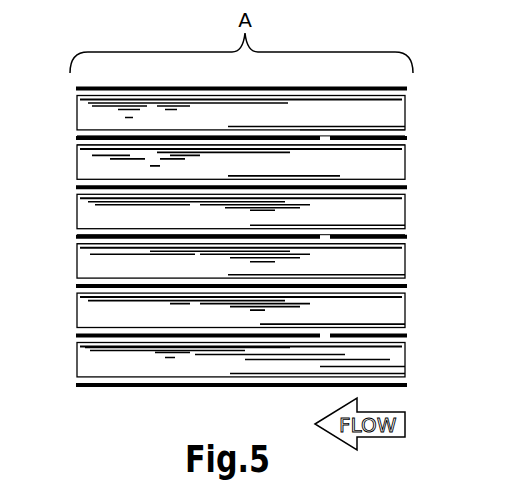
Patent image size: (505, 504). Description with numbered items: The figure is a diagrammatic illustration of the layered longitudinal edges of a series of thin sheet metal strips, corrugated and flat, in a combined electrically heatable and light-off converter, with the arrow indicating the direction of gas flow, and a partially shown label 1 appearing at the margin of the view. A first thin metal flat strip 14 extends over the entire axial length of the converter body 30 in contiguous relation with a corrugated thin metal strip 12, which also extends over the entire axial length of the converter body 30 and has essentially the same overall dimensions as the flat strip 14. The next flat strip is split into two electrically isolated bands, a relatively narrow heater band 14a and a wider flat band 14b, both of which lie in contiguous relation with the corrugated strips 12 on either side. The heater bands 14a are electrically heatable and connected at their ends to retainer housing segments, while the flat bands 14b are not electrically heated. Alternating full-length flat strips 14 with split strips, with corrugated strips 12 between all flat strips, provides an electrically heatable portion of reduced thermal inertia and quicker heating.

The flat thin metal strip 14 is at (78, 90).
The corrugated thin metal strip 12 is at (74, 160).
The heater band 14a is at (398, 137).
The flat band 14b is at (79, 146).
The converter body 30 is at (417, 132).
The heat exchanger assembly 1 is at (290, 342).